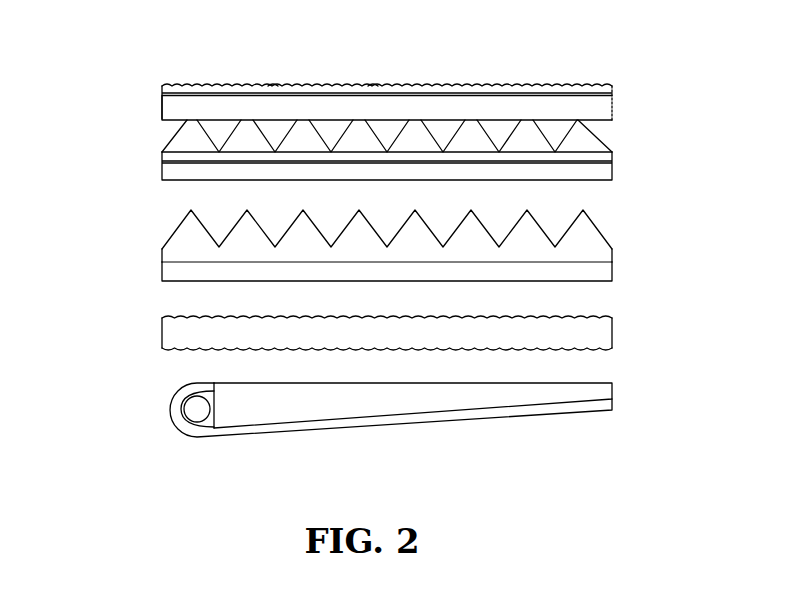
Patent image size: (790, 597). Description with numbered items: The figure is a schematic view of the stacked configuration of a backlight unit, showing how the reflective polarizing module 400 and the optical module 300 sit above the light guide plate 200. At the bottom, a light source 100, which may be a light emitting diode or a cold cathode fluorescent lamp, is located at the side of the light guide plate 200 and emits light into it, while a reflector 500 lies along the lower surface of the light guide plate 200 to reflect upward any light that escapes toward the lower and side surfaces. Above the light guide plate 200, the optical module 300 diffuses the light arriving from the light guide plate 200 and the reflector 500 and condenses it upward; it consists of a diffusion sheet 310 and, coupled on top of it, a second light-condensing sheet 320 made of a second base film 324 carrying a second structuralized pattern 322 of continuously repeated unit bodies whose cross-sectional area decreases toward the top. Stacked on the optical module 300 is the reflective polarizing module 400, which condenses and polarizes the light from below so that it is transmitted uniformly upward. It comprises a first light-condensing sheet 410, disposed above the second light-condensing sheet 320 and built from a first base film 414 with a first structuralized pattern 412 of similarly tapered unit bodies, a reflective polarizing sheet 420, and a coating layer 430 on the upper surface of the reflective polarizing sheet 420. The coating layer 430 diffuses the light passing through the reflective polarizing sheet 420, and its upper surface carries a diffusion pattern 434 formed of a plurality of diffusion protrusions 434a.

The light source 100 is at (193, 410).
The light guide plate 200 is at (268, 413).
The optical module 300 is at (93, 233).
The diffusion sheet 310 is at (168, 335).
The second light-condensing sheet 320 is at (163, 240).
The second structuralized pattern 322 is at (590, 249).
The second base film 324 is at (598, 270).
The reflective polarizing module 400 is at (93, 83).
The first light-condensing sheet 410 is at (163, 153).
The first structuralized pattern 412 is at (590, 147).
The first base film 414 is at (598, 170).
The reflective polarizing sheet 420 is at (168, 108).
The coating layer 430 is at (163, 93).
The diffusion pattern 434 is at (210, 84).
The diffusion protrusion 434a is at (268, 85).
The reflector 500 is at (435, 422).